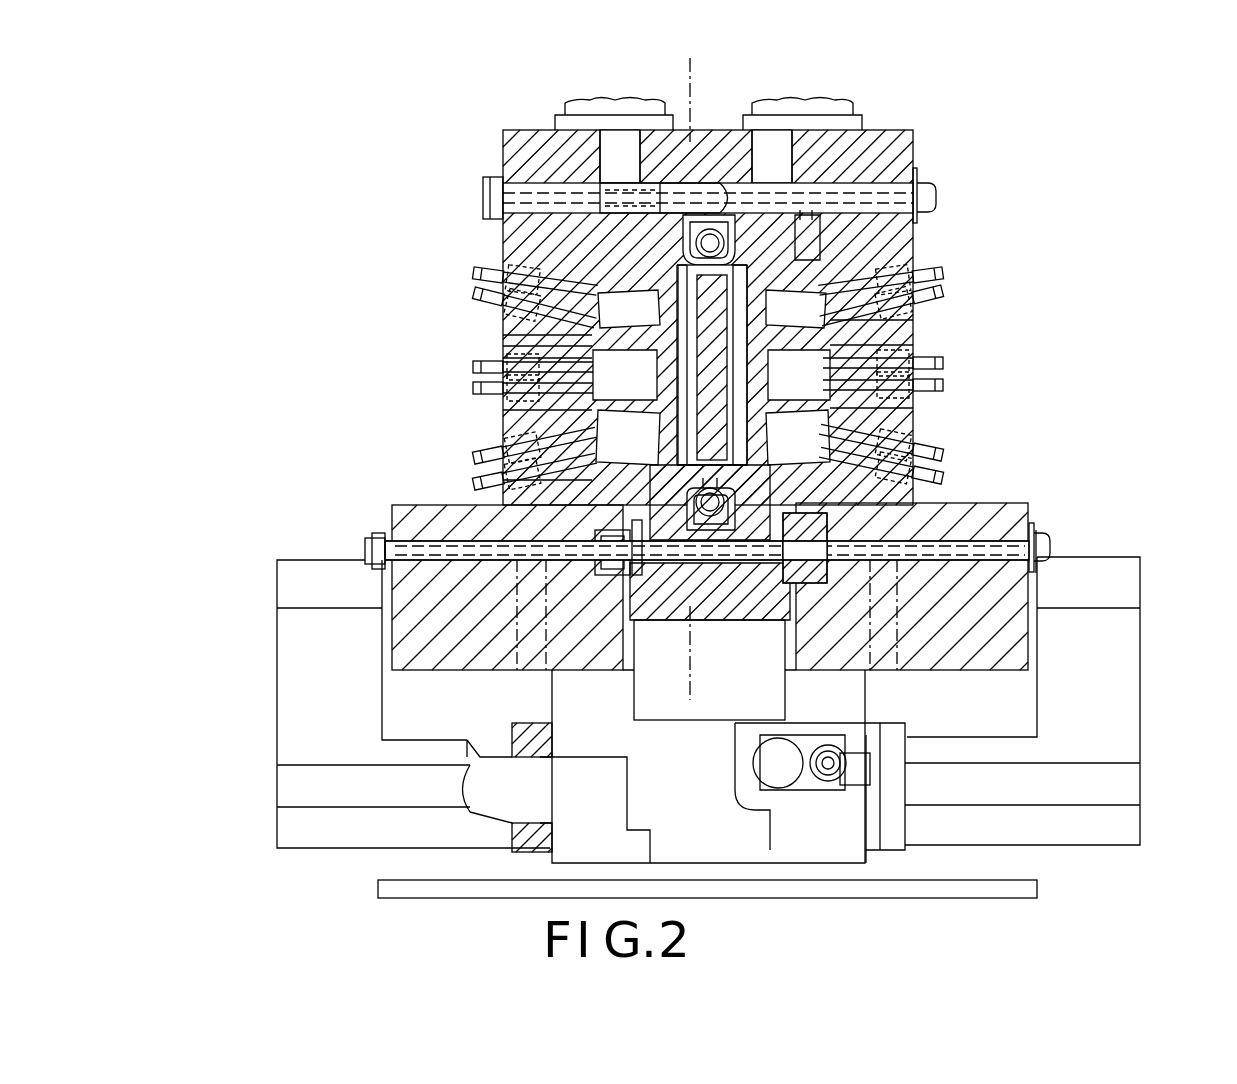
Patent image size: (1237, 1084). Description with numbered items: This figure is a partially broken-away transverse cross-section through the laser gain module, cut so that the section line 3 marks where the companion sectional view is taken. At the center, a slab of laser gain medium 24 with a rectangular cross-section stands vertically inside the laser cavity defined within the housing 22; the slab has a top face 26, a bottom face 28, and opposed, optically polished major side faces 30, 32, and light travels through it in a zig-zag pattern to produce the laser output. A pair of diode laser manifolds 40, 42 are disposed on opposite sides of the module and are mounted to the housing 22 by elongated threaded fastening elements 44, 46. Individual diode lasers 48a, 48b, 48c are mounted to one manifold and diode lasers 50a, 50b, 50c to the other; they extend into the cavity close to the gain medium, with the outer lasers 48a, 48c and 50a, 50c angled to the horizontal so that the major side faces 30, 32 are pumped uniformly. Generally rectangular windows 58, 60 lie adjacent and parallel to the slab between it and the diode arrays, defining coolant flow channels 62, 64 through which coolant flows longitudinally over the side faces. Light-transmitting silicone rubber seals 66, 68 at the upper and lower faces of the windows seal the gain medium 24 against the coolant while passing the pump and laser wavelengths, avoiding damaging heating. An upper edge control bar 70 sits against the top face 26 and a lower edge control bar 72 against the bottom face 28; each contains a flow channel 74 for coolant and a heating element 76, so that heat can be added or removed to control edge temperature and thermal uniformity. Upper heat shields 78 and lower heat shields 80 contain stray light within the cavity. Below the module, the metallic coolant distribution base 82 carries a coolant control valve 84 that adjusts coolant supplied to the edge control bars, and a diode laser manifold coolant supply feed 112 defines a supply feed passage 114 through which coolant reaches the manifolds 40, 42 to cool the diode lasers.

The section line 3- 3 is at (688, 62).
The housing 22 is at (722, 130).
The laser gain medium 24 is at (560, 410).
The top face 26 is at (915, 265).
The bottom face 28 is at (505, 480).
The major side face 30 is at (520, 360).
The major side face 32 is at (930, 410).
The diode laser manifold 40 is at (393, 580).
The diode laser manifold 42 is at (1026, 505).
The elongated threaded fastening element 44 is at (1046, 543).
The elongated threaded fastening element 46 is at (936, 197).
The diode laser 48a is at (942, 296).
The diode laser 48b is at (945, 385).
The diode laser 48c is at (945, 458).
The diode laser 50a is at (475, 280).
The diode laser 50b is at (472, 390).
The diode laser 50c is at (475, 455).
The window 58 is at (600, 349).
The window 60 is at (915, 343).
The coolant flow channel 62 is at (600, 335).
The coolant flow channel 64 is at (915, 320).
The seal 66 is at (680, 275).
The seal 68 is at (750, 330).
The upper edge control bar 70 is at (752, 215).
The lower edge control bar 72 is at (690, 580).
The flow channel 74 is at (880, 185).
The heating element 76 is at (915, 231).
The upper heat shield 78 is at (913, 253).
The lower heat shield 80 is at (908, 488).
The coolant distribution base 82 is at (1037, 890).
The coolant control valve 84 is at (800, 790).
The diode laser manifold coolant supply feed 112 is at (1100, 557).
The supply feed passage 114 is at (455, 815).